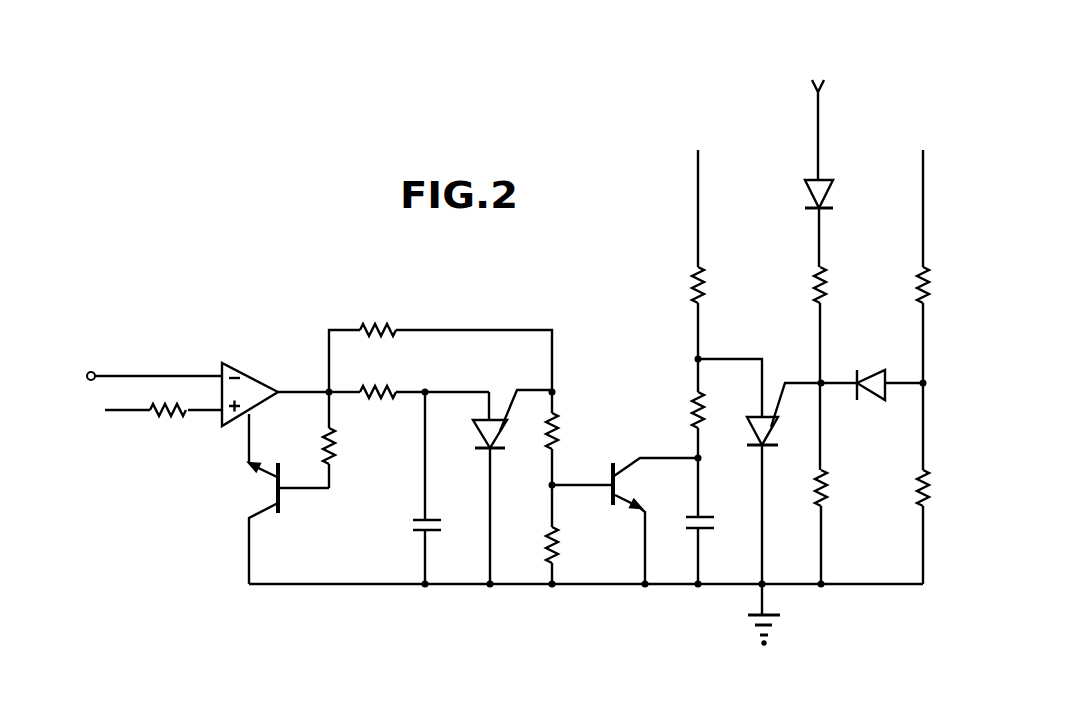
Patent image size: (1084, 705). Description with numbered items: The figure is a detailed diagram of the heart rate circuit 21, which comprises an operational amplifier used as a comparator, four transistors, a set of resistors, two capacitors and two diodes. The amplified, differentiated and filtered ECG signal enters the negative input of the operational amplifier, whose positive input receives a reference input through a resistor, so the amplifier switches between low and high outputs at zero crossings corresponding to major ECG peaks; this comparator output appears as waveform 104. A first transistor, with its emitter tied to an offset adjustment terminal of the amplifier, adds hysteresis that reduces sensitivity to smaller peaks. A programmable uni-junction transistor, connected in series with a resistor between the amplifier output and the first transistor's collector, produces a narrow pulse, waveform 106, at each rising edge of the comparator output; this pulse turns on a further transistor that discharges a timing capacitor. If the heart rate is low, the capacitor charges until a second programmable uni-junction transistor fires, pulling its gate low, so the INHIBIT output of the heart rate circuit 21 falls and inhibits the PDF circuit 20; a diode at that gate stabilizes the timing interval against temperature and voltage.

The PDF circuit 20 is at (827, 102).
The heart rate circuit 21 is at (312, 295).
The waveform 104 is at (308, 390).
The waveform 106 is at (588, 482).